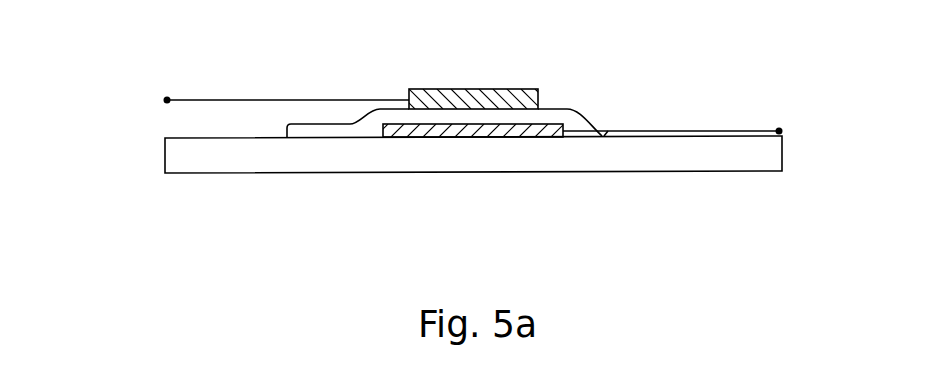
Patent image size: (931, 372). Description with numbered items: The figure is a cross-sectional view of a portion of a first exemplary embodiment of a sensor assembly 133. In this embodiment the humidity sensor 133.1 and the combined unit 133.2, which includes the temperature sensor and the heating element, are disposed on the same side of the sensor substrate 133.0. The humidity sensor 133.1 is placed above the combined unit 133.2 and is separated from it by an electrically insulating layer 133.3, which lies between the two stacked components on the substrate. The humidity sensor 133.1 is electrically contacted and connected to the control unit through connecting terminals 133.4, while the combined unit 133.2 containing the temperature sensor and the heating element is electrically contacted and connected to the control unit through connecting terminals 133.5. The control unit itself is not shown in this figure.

The sensor assembly 133 is at (140, 171).
The sensor substrate 133.0 is at (238, 160).
The humidity sensor 133.1 is at (473, 89).
The combined unit including the temperature sensor and the heating element 133.2 is at (523, 130).
The electrically insulating layer 133.3 is at (568, 110).
The connecting terminals 133.4 is at (167, 100).
The connecting terminals 133.5 is at (779, 131).